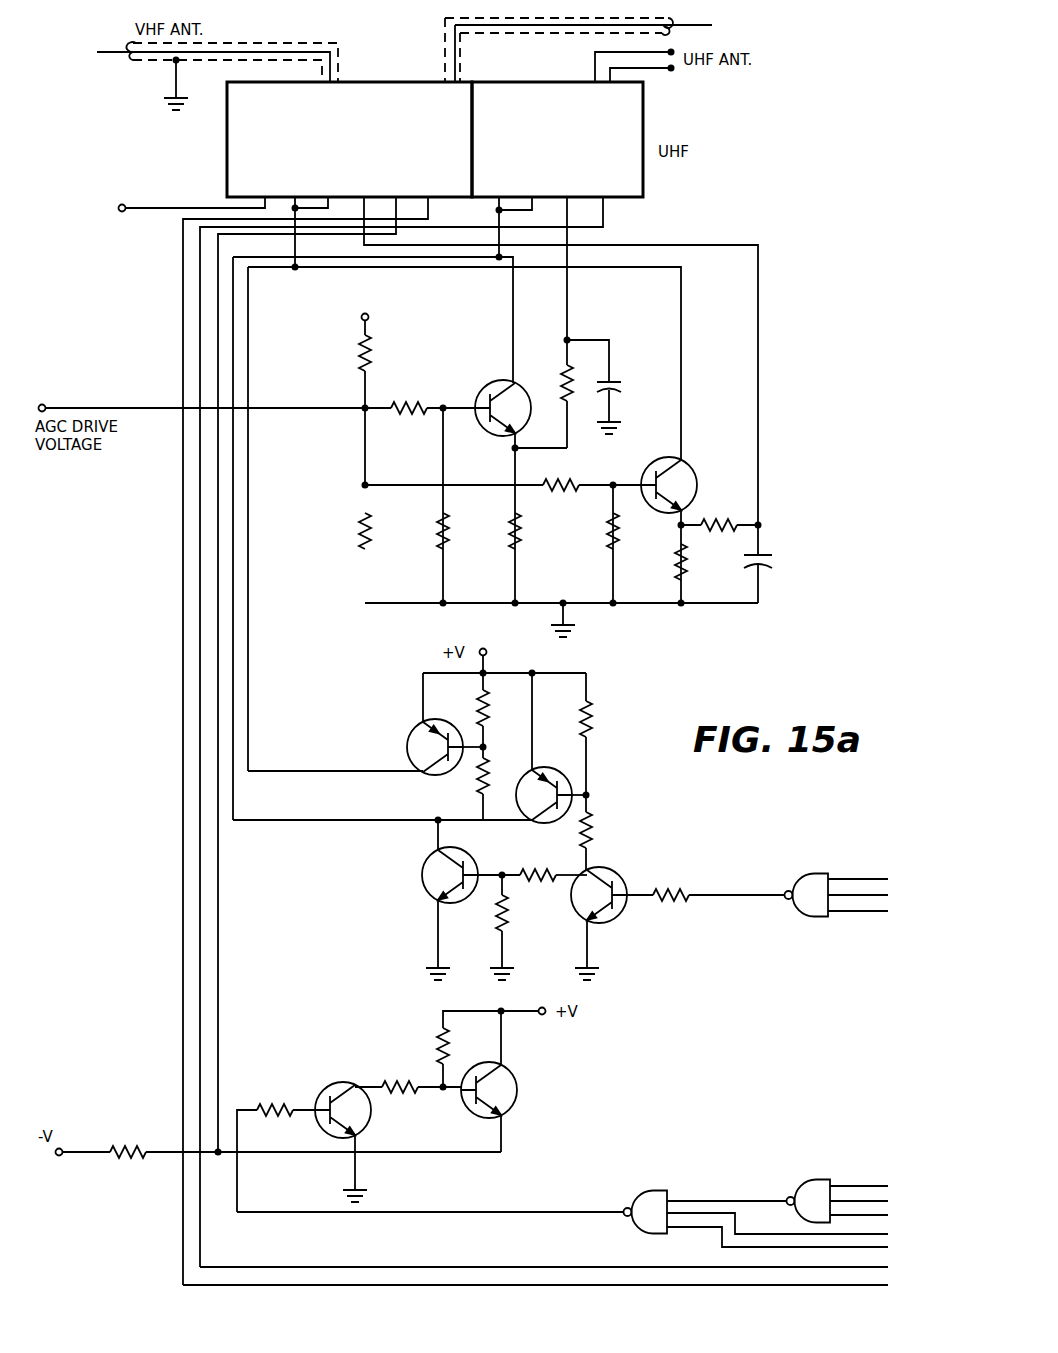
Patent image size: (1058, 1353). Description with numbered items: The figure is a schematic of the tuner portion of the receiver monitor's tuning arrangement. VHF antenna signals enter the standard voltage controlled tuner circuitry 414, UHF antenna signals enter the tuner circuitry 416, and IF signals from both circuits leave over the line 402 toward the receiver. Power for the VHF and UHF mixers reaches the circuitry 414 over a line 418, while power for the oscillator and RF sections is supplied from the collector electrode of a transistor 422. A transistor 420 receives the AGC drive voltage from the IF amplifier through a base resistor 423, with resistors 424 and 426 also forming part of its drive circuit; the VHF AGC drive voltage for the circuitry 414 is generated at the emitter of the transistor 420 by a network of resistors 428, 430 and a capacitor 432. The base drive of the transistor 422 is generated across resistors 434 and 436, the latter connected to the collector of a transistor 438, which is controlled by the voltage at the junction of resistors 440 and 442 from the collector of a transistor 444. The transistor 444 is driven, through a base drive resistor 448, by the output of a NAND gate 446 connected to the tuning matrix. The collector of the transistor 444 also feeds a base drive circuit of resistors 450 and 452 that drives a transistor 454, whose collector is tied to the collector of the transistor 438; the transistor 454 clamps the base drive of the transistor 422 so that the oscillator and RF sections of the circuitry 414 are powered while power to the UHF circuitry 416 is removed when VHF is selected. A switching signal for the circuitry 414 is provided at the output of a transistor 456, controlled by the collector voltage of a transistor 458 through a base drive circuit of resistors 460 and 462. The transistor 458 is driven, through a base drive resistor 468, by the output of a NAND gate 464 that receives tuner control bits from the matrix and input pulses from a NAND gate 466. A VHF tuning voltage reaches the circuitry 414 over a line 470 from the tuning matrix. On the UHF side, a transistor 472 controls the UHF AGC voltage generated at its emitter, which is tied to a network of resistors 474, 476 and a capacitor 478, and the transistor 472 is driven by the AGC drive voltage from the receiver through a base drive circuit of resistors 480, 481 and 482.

The line 402 is at (587, 36).
The voltage controlled receiver tuner circuitry 414 is at (226, 131).
The tuner circuitry 416 is at (645, 115).
The line 418 is at (193, 208).
The transistor 420 is at (693, 477).
The transistor 422 is at (408, 746).
The base resistor 423 is at (573, 475).
The resistor 424 is at (363, 547).
The resistor 426 is at (612, 548).
The resistor 428 is at (683, 571).
The resistor 430 is at (735, 505).
The capacitor 432 is at (780, 566).
The resistor 434 is at (488, 694).
The resistor 436 is at (479, 777).
The transistor 438 is at (570, 778).
The resistor 440 is at (587, 710).
The resistor 442 is at (592, 828).
The transistor 444 is at (617, 874).
The NAND gate 446 is at (807, 872).
The base drive resistor 448 is at (658, 905).
The resistor 450 is at (538, 871).
The resistor 452 is at (507, 925).
The transistor 454 is at (421, 869).
The transistor 456 is at (518, 1090).
The transistor 458 is at (371, 1127).
The resistor 460 is at (412, 1077).
The resistor 462 is at (440, 1034).
The NAND gate 464 is at (645, 1190).
The NAND gate 466 is at (813, 1178).
The base drive resistor 468 is at (293, 1110).
The line 470 is at (357, 1285).
The transistor 472 is at (488, 388).
The resistor 474 is at (514, 547).
The resistor 476 is at (563, 372).
The capacitor 478 is at (626, 387).
The resistor 480 is at (363, 350).
The resistor 481 is at (402, 400).
The resistor 482 is at (442, 547).